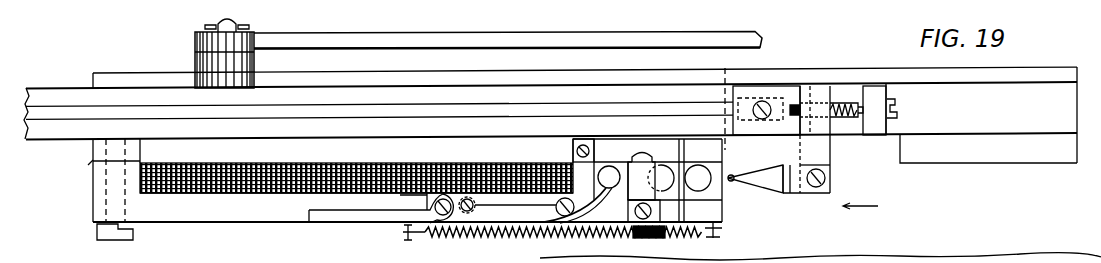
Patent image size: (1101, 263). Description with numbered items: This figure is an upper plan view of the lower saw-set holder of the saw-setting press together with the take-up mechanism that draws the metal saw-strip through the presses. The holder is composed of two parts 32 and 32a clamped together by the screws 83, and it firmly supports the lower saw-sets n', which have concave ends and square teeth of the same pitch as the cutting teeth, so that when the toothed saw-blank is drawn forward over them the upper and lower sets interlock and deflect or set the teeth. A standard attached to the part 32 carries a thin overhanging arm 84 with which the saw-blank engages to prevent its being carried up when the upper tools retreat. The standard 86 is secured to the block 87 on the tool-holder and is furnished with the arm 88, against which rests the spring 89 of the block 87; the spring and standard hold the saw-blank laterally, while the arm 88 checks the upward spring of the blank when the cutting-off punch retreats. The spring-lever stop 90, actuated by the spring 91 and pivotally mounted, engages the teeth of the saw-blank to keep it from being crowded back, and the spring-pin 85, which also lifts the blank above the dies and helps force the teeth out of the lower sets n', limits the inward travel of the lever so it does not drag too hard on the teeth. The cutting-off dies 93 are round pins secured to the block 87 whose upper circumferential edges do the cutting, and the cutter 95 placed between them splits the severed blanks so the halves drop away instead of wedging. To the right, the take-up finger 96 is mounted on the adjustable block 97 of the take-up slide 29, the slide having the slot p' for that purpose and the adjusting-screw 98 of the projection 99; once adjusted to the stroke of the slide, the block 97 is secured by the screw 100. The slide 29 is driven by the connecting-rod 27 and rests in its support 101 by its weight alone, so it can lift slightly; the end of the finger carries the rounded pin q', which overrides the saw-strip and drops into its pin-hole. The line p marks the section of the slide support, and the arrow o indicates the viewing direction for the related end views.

The connecting-rod 27 is at (508, 41).
The take-up slide 29 is at (550, 115).
The holder part 32 is at (93, 207).
The holder part 32a is at (77, 168).
The clamping screws 83 is at (573, 143).
The overhanging arm 84 is at (573, 160).
The spring-pin 85 is at (582, 194).
The standard 86 is at (632, 226).
The block 87 is at (708, 180).
The arm 88 is at (240, 23).
The spring 89 is at (625, 160).
The spring-lever stop 90 is at (530, 210).
The spring 91 is at (534, 240).
The cutting-off dies 93 is at (679, 178).
The cutter 95 is at (684, 158).
The take-up finger 96 is at (768, 168).
The adjustable block 97 is at (826, 139).
The adjusting-screw 98 is at (896, 102).
The projection 99 is at (874, 110).
The screw 100 is at (766, 110).
The slide support 101 is at (988, 148).
The section line p is at (721, 100).
The slot p' is at (412, 111).
The lower saw-sets n' is at (356, 168).
The pin q' is at (737, 191).
The arrow o is at (860, 199).